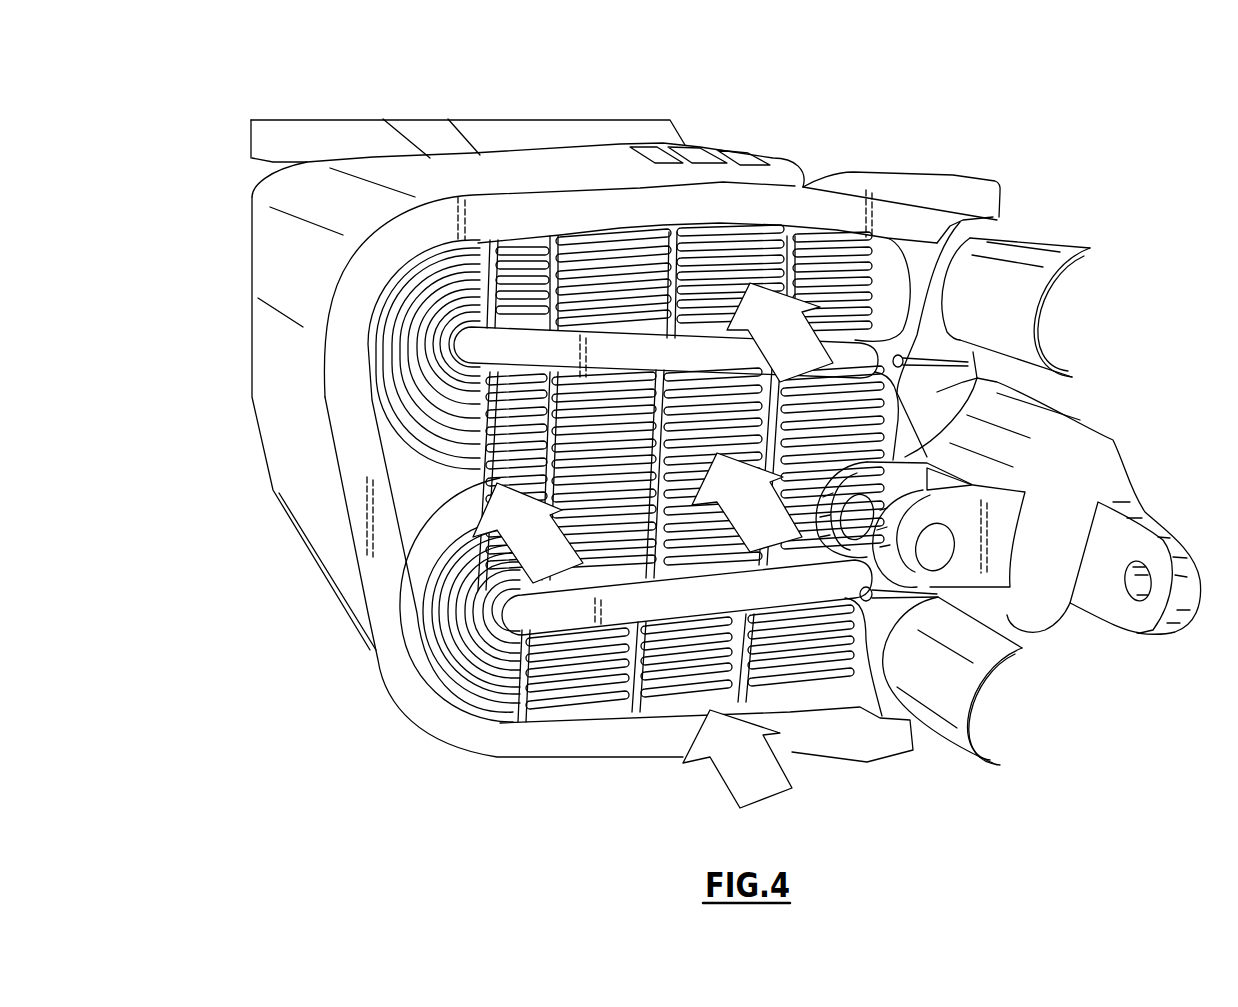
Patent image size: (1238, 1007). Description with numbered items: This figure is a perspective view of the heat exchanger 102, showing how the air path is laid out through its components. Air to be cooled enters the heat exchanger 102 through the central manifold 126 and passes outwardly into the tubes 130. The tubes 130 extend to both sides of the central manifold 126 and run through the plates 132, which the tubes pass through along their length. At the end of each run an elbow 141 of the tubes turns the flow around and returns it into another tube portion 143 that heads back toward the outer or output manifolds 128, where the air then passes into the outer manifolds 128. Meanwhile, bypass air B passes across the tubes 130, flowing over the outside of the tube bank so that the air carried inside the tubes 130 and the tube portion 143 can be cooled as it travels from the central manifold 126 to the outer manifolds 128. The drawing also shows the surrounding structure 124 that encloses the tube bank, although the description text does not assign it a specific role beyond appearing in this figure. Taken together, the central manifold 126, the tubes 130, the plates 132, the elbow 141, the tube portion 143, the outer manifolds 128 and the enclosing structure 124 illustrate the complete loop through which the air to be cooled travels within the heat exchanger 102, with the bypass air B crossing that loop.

The heat exchanger 102 is at (1093, 146).
The housing 124 is at (310, 517).
The central manifold 126 is at (1067, 427).
The outer manifolds 128 is at (1047, 243).
The tubes 130 is at (565, 695).
The plates 132 is at (507, 710).
The elbow 141 is at (443, 620).
The tube portion 143 is at (610, 568).
The bypass air B is at (737, 788).